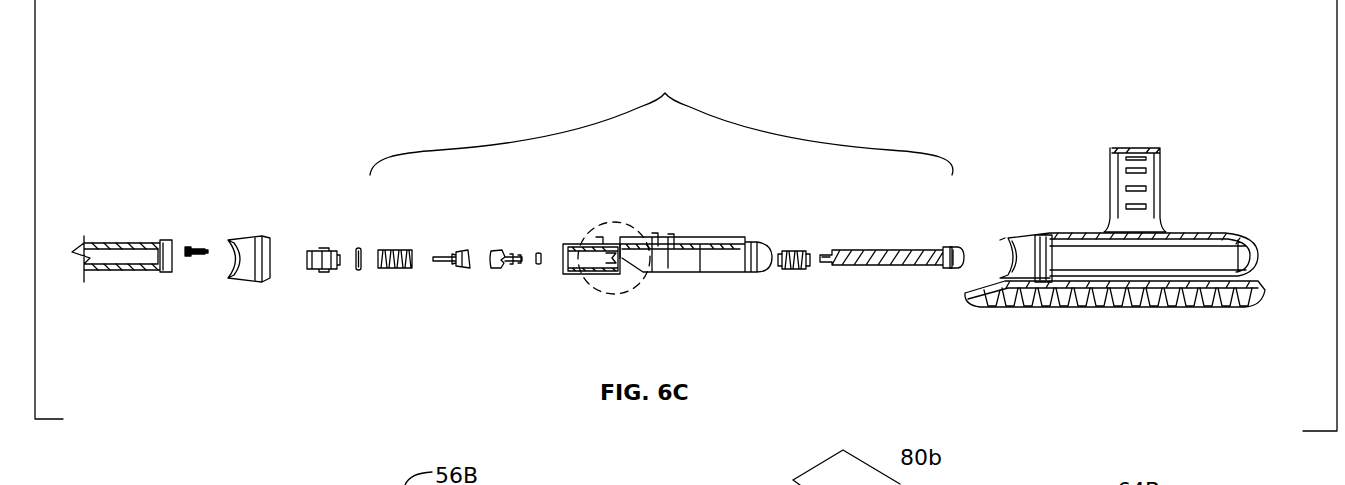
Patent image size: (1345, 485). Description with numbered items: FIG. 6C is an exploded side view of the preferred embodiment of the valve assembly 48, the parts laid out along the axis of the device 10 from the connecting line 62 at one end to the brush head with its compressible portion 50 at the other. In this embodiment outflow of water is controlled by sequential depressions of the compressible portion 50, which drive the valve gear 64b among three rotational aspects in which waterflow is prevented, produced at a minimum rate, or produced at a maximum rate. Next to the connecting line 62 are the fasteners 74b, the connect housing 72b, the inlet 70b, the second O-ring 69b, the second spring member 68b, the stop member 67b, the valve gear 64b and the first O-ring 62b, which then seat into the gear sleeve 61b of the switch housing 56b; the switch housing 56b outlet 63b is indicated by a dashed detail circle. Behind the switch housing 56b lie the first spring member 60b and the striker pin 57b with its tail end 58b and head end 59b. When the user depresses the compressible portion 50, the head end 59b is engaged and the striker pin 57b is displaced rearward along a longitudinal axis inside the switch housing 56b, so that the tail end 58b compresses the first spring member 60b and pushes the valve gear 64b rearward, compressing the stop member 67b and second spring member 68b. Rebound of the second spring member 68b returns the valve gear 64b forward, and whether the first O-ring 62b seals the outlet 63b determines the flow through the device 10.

The device 10 is at (1208, 174).
The valve assembly 48 is at (661, 117).
The compressible portion 50 is at (1258, 258).
The switch housing 56b is at (690, 240).
The striker pin 57b is at (893, 247).
The tail end 58b is at (790, 270).
The head end 59b is at (958, 247).
The first spring member 60b is at (800, 250).
The gear sleeve 61b is at (578, 245).
The connecting line 62 is at (131, 243).
The first O-ring 62b is at (538, 253).
The outlet 63b is at (637, 274).
The valve gear 64b is at (495, 270).
The stop member 67b is at (462, 253).
The second spring member 68b is at (393, 270).
The second O-ring 69b is at (357, 246).
The inlet 70b is at (325, 272).
The connect housing 72b is at (258, 278).
The fasteners 74b is at (198, 247).